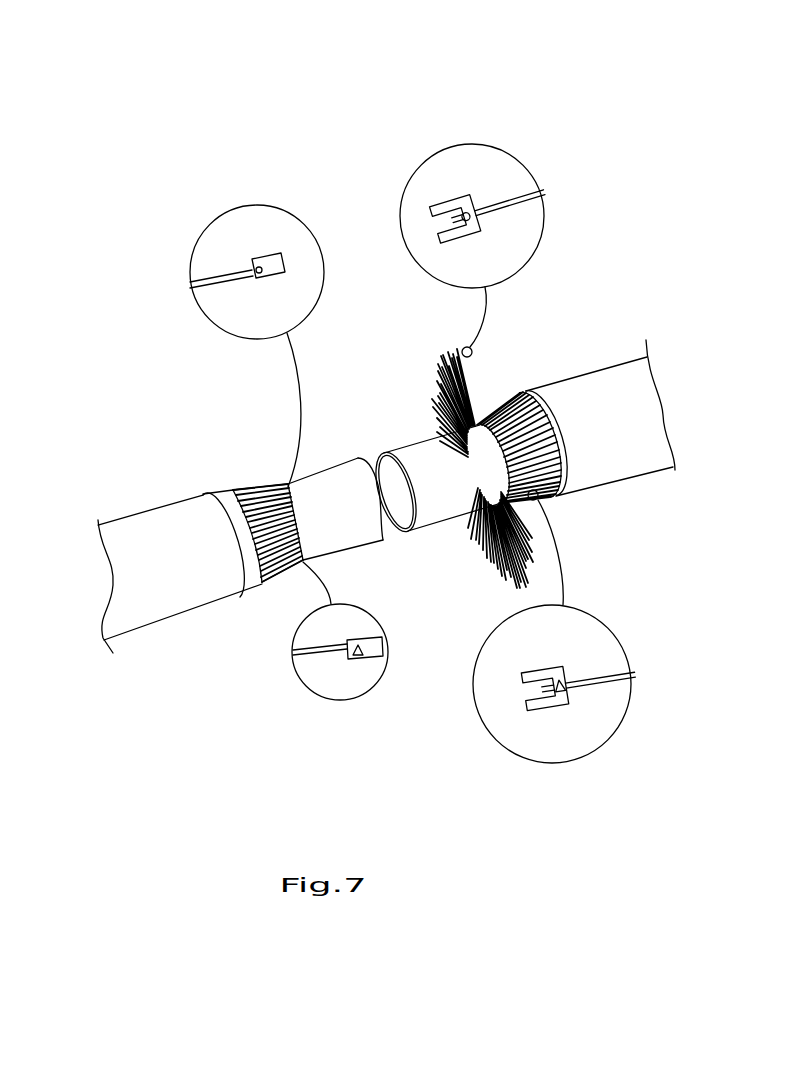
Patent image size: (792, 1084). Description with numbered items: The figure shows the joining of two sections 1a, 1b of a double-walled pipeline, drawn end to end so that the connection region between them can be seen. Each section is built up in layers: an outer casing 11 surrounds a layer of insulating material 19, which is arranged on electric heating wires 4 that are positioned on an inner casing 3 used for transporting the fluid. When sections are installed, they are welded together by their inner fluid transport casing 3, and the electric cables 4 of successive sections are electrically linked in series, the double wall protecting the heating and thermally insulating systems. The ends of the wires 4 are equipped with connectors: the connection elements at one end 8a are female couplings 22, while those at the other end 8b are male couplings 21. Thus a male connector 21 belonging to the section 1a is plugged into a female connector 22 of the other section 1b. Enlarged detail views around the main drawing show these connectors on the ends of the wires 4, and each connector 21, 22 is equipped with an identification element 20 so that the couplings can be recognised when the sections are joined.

The section 1a is at (178, 406).
The section 1b is at (569, 314).
The inner casing 3 is at (345, 470).
The electric heating wires 4 is at (193, 282).
The end 8a is at (383, 552).
The end 8b is at (407, 545).
The outer casing 11 is at (143, 527).
The layer of insulating material 19 is at (250, 578).
The identification element 20 is at (256, 268).
The male connector 21 is at (270, 256).
The female connector 22 is at (455, 204).